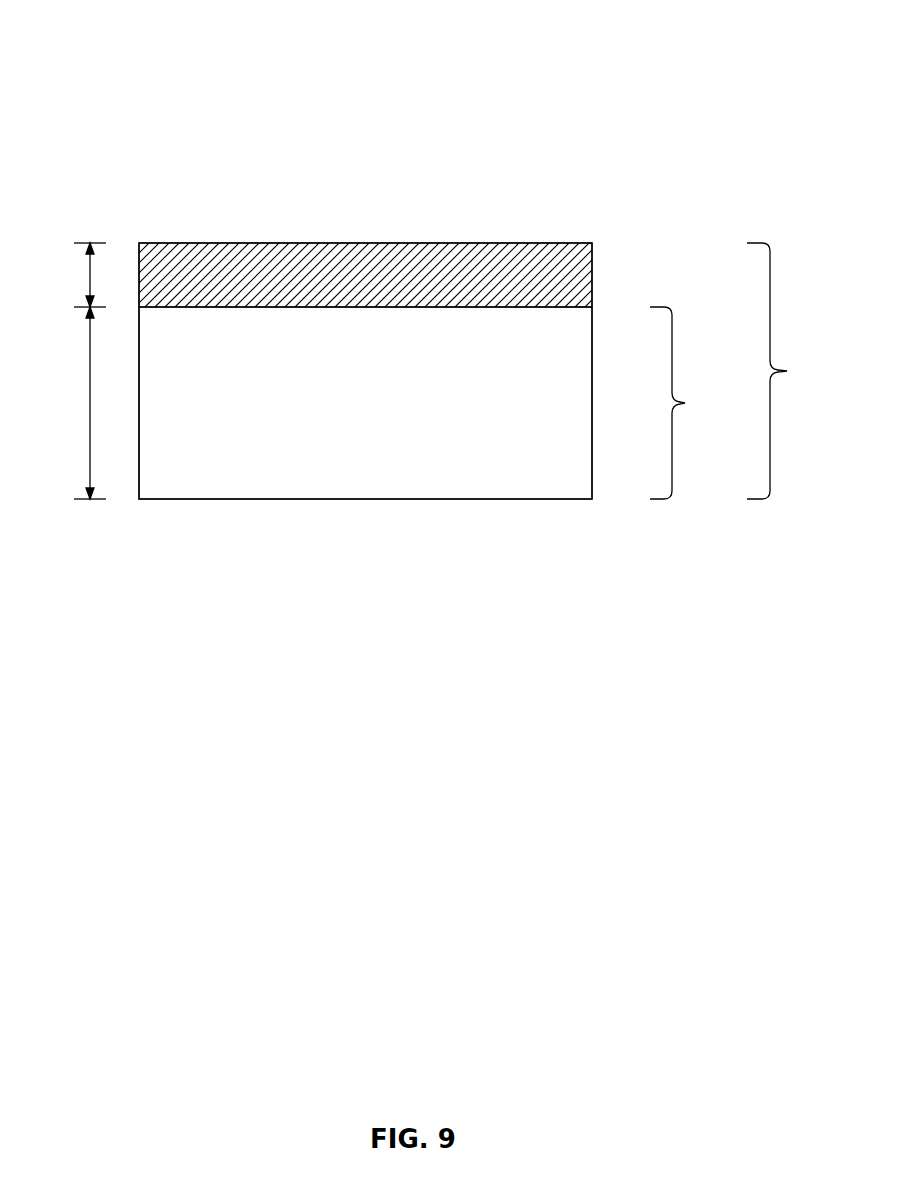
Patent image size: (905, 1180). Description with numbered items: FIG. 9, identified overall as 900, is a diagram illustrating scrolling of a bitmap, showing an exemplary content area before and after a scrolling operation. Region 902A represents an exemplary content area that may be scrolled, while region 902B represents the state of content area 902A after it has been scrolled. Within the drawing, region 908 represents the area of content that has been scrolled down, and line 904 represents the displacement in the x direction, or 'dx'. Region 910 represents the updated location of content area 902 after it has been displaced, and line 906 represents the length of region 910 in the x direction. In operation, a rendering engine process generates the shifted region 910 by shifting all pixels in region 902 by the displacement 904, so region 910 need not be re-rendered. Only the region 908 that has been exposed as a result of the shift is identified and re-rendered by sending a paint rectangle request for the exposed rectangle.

The layered structure 900 is at (781, 41).
The content area 902 is at (568, 158).
The content area region 902A is at (699, 403).
The scrolled content area state 902B is at (797, 371).
The displacement line 904 is at (90, 287).
The length line 906 is at (90, 433).
The scrolled-down content region 908 is at (552, 271).
The shifted region 910 is at (547, 384).